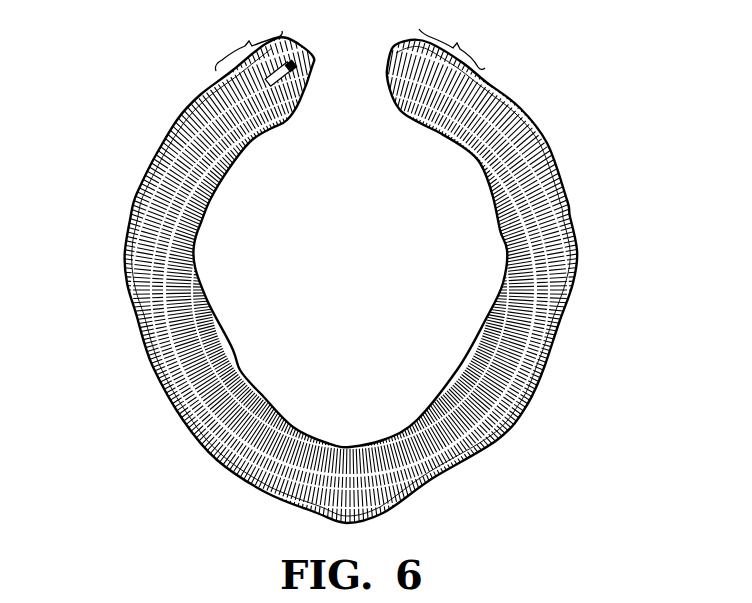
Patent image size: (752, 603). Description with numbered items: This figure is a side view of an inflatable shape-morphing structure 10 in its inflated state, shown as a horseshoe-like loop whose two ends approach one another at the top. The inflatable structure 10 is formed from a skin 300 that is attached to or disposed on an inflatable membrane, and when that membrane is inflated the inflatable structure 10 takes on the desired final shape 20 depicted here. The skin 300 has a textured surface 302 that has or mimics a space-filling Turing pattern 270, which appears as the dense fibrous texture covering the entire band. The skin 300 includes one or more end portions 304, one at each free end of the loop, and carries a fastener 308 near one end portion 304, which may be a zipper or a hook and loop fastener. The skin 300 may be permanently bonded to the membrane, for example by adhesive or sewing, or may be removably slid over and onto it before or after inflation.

The inflatable structure 10 is at (612, 66).
The desired final shape 20 is at (584, 251).
The space-filling Turing pattern 270 is at (552, 392).
The skin 300 is at (167, 125).
The textured surface 302 is at (133, 197).
The end portions 304 is at (350, 43).
The fastener 308 is at (307, 50).